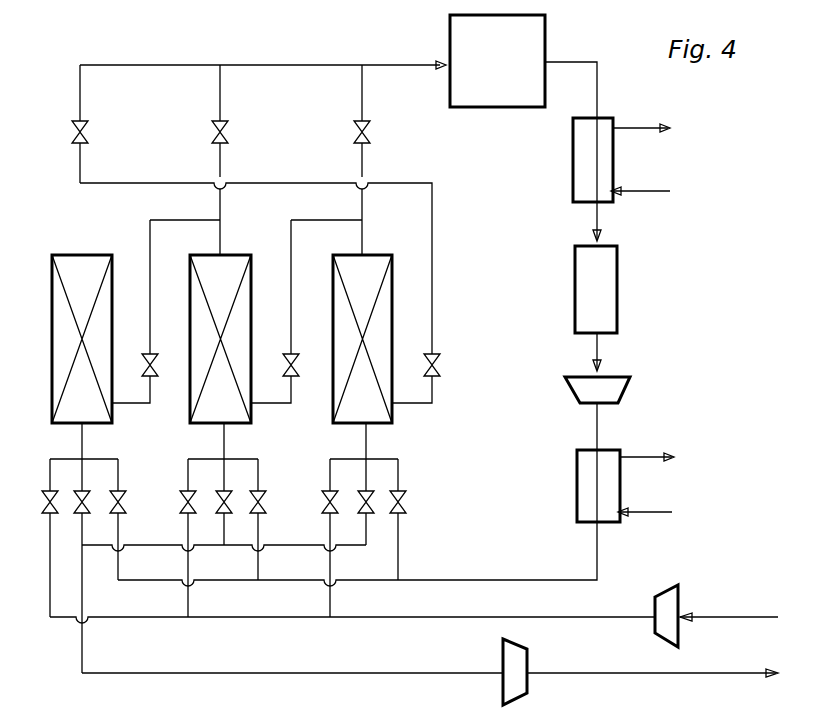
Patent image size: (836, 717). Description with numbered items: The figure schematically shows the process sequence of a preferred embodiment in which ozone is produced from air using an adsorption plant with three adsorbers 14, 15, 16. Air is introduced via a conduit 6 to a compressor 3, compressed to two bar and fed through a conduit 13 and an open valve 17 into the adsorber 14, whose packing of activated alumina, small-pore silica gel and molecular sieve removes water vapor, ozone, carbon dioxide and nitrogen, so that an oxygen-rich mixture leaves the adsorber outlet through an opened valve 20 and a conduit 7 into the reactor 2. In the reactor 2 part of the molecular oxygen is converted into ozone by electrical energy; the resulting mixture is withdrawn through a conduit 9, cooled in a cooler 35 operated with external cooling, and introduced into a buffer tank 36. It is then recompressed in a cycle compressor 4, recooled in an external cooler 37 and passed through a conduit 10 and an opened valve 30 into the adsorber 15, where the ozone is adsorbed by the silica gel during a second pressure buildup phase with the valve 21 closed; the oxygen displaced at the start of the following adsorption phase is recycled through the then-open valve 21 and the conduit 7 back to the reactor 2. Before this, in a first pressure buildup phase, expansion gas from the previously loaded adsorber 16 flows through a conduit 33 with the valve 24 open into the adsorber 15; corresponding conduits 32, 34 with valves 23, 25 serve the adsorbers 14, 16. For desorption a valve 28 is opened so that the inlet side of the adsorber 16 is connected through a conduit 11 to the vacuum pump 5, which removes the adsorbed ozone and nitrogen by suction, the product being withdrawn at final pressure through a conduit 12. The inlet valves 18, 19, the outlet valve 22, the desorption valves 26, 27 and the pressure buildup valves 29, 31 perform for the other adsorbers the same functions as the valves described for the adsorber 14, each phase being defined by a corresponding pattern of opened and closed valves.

The reactor 2 is at (468, 108).
The compressor 3 is at (668, 586).
The cycle compressor 4 is at (628, 390).
The vacuum pump 5 is at (522, 650).
The conduit 6 is at (728, 616).
The conduit 7 is at (304, 63).
The conduit 9 is at (597, 83).
The conduit 10 is at (487, 579).
The conduit 11 is at (362, 672).
The conduit 12 is at (585, 672).
The conduit 13 is at (272, 620).
The adsorber 14 is at (97, 256).
The adsorber 15 is at (238, 256).
The adsorber 16 is at (380, 256).
The valve 17 is at (45, 497).
The valve 18 is at (184, 496).
The valve 19 is at (326, 496).
The valve 20 is at (88, 127).
The valve 21 is at (228, 127).
The valve 22 is at (370, 127).
The valve 23 is at (156, 372).
The valve 24 is at (297, 372).
The valve 25 is at (438, 372).
The valve 26 is at (88, 507).
The valve 27 is at (230, 507).
The valve 28 is at (372, 507).
The valve 29 is at (124, 506).
The valve 30 is at (264, 506).
The valve 31 is at (404, 506).
The conduit 32 is at (150, 248).
The conduit 33 is at (291, 247).
The conduit 34 is at (432, 247).
The cooler 35 is at (573, 158).
The buffer tank 36 is at (575, 290).
The external cooler 37 is at (577, 490).